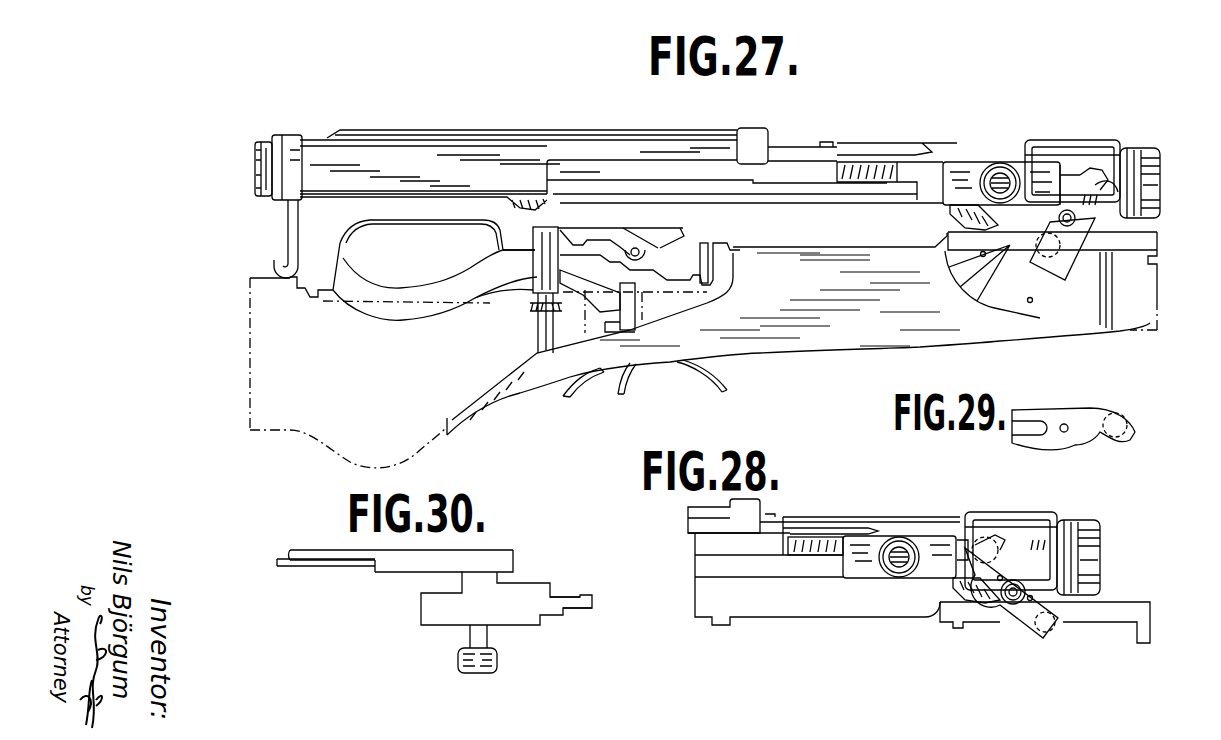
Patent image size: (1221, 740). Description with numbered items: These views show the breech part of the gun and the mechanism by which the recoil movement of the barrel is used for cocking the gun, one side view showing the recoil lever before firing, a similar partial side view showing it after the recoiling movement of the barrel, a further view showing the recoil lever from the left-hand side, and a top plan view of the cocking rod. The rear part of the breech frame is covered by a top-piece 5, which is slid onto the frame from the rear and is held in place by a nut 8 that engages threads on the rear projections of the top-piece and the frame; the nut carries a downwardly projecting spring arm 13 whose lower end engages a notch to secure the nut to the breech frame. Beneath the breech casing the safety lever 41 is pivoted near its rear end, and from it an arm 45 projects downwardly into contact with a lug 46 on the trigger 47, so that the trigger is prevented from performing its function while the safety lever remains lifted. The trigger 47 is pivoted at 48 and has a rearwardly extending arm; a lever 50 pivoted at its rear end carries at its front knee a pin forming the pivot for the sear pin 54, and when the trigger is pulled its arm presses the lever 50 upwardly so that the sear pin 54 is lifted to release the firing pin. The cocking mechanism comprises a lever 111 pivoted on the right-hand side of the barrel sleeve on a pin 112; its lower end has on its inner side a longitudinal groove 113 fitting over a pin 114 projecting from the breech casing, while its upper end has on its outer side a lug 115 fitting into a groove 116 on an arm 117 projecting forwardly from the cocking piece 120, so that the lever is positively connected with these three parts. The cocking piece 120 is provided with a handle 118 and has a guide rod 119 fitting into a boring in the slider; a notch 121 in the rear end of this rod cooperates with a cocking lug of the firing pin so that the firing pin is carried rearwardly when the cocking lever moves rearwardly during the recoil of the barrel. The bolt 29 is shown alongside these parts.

In FIG. 27, the top-piece 5 is at (490, 150).
In FIG. 27, the nut 8 is at (262, 172).
In FIG. 27, the spring arm 13 is at (282, 268).
In FIG. 27, the bolt 29 is at (1034, 150).
In FIG. 28, the bolt 29 is at (1045, 525).
In FIG. 27, the safety lever 41 is at (505, 274).
In FIG. 27, the arm 45 is at (610, 292).
In FIG. 27, the lug 46 is at (636, 304).
In FIG. 27, the trigger 47 is at (627, 386).
In FIG. 27, the trigger pivot 48 is at (637, 248).
In FIG. 27, the lever 50 is at (648, 282).
In FIG. 27, the sear pin 54 is at (710, 262).
In FIG. 27, the lever 111 is at (1097, 205).
In FIG. 28, the lever 111 is at (1042, 552).
In FIG. 27, the pin 112 is at (1085, 222).
In FIG. 28, the pin 112 is at (1010, 600).
In FIG. 27, the longitudinal groove 113 is at (1045, 268).
In FIG. 28, the longitudinal groove 113 is at (1035, 625).
In FIG. 29, the longitudinal groove 113 is at (1024, 432).
In FIG. 27, the pin 114 is at (1070, 268).
In FIG. 28, the pin 114 is at (1040, 625).
In FIG. 27, the lug 115 is at (1100, 186).
In FIG. 28, the lug 115 is at (983, 530).
In FIG. 29, the lug 115 is at (1127, 434).
In FIG. 27, the groove 116 is at (1090, 172).
In FIG. 28, the groove 116 is at (1000, 540).
In FIG. 30, the groove 116 is at (575, 597).
In FIG. 27, the arm 117 is at (1068, 172).
In FIG. 28, the arm 117 is at (962, 543).
In FIG. 30, the arm 117 is at (568, 608).
In FIG. 27, the handle 118 is at (1000, 170).
In FIG. 28, the handle 118 is at (895, 574).
In FIG. 30, the handle 118 is at (497, 662).
In FIG. 27, the guide rod 119 is at (856, 172).
In FIG. 28, the guide rod 119 is at (790, 538).
In FIG. 30, the guide rod 119 is at (331, 555).
In FIG. 27, the cocking piece 120 is at (953, 165).
In FIG. 28, the cocking piece 120 is at (852, 572).
In FIG. 30, the cocking piece 120 is at (483, 587).
In FIG. 30, the notch 121 is at (288, 548).